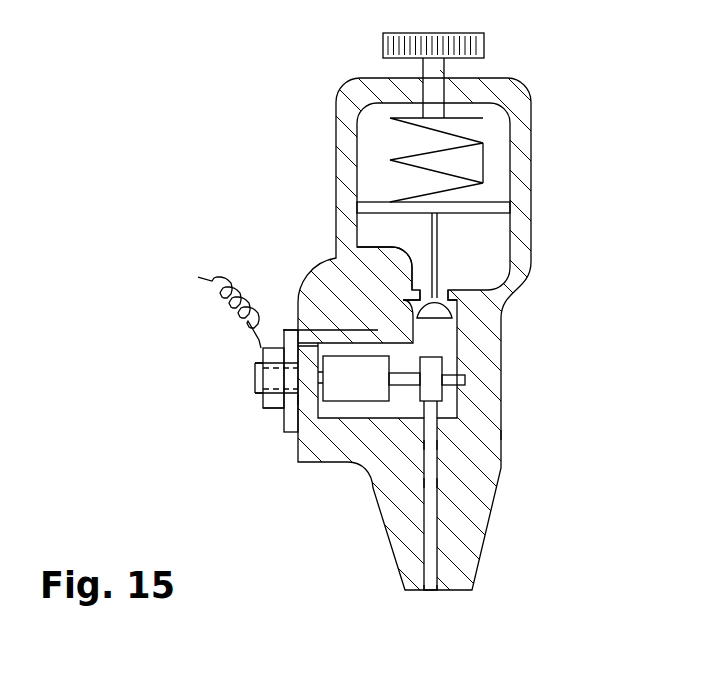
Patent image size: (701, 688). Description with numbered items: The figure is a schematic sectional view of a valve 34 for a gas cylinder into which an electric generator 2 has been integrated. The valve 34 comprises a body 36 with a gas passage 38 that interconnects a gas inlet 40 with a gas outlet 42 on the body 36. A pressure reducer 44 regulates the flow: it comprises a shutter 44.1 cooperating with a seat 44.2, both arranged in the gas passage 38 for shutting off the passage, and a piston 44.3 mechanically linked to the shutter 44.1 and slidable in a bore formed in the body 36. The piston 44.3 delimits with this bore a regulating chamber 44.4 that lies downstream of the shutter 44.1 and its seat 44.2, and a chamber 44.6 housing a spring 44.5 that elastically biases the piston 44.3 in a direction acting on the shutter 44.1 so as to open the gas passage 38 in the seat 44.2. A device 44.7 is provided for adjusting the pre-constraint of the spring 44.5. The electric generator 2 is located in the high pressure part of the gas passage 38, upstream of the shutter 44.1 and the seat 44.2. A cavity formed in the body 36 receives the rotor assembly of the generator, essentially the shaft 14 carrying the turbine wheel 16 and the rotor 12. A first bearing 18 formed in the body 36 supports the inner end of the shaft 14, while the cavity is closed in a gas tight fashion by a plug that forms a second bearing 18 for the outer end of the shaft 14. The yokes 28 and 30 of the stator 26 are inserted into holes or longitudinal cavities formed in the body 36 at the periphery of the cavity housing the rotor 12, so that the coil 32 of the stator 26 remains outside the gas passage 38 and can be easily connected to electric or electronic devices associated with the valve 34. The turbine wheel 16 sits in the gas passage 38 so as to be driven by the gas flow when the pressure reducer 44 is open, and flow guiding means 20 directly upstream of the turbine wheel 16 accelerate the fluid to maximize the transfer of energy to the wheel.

The electric generator 2 is at (188, 335).
The rotor 12 is at (353, 378).
The shaft 14 is at (407, 401).
The turbine wheel 16 is at (442, 393).
The bearing 18 is at (378, 427).
The flow guiding means 20 is at (437, 445).
The stator 26 is at (210, 323).
The yoke 28 is at (250, 370).
The yoke 30 is at (282, 418).
The coil 32 is at (262, 410).
The valve 34 is at (152, 60).
The body 36 is at (485, 433).
The gas passage 38 is at (432, 483).
The gas inlet 40 is at (428, 573).
The gas outlet 42 is at (515, 247).
The pressure reducer 44 is at (318, 212).
The shutter 44.1 is at (436, 310).
The seat 44.2 is at (372, 246).
The piston 44.3 is at (487, 205).
The regulating chamber 44.4 is at (473, 263).
The spring 44.5 is at (472, 153).
The chamber 44.6 is at (373, 148).
The adjusting device 44.7 is at (383, 44).